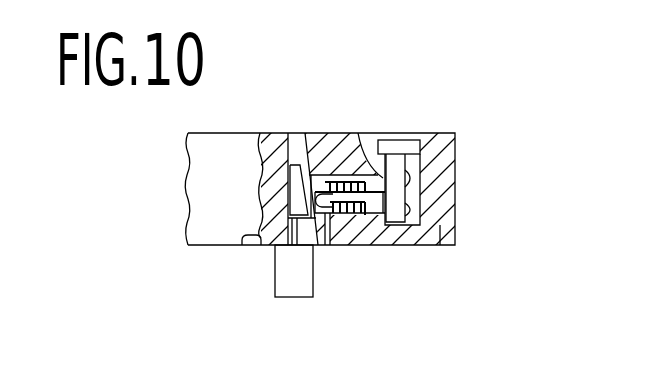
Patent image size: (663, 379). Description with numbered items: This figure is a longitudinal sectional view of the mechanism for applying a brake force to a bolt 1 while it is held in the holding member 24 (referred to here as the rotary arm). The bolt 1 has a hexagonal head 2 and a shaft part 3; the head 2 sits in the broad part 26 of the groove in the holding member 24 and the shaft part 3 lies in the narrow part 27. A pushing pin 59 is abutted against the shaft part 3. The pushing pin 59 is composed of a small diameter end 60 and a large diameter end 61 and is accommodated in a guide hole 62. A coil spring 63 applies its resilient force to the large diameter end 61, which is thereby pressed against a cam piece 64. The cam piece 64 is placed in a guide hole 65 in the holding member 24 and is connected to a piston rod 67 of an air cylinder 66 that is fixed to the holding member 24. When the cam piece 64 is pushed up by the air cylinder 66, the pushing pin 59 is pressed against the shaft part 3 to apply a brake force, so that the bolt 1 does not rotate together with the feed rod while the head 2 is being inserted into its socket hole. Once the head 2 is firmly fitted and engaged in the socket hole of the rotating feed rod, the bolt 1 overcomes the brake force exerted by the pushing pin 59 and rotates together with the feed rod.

The bolt 1 is at (405, 154).
The hexagonal head 2 is at (414, 133).
The shaft part 3 is at (410, 171).
The holding member 24 is at (220, 133).
The broad part 26 is at (428, 140).
The narrow part 27 is at (447, 224).
The pushing pin 59 is at (350, 213).
The small diameter end 60 is at (383, 214).
The large diameter end 61 is at (323, 175).
The guide hole 62 is at (328, 215).
The coil spring 63 is at (352, 180).
The cam piece 64 is at (262, 190).
The guide hole 65 is at (295, 140).
The air cylinder 66 is at (275, 282).
The piston rod 67 is at (242, 246).